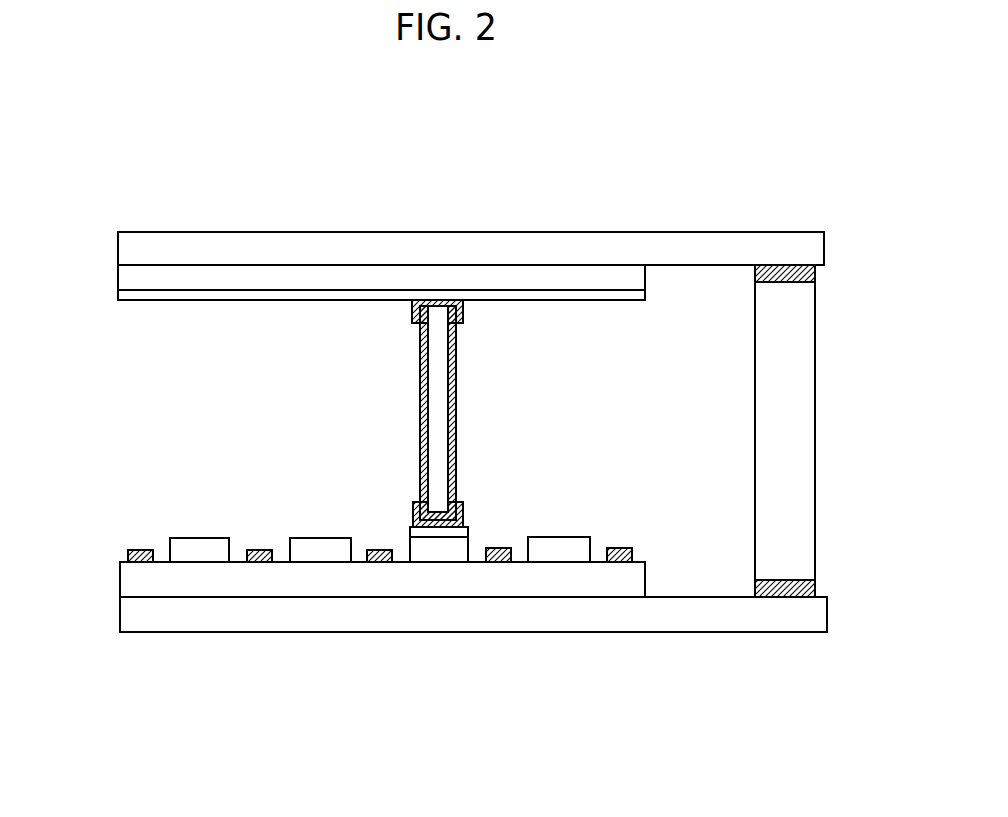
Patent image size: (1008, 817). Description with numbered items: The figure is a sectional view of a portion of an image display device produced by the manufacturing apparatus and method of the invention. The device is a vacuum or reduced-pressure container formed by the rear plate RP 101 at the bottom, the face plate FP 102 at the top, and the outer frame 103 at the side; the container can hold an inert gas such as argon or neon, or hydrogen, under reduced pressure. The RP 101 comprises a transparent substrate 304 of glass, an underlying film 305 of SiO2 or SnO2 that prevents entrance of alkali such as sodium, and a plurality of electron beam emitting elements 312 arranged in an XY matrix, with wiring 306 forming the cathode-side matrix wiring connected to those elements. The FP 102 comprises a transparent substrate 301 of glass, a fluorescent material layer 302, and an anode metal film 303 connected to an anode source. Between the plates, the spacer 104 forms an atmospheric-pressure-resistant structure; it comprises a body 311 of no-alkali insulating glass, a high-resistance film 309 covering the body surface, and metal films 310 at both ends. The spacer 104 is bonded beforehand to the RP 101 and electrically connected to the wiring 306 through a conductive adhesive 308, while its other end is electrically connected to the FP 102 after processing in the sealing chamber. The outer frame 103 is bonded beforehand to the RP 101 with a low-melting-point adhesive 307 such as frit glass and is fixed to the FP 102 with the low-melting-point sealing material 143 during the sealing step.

The RP 101 is at (439, 630).
The FP 102 is at (438, 236).
The outer frame 103 is at (802, 428).
The spacer 104 is at (445, 413).
The low-melting-point sealing material 143 is at (817, 275).
The transparent substrate 301 is at (488, 247).
The fluorescent material layer 302 is at (330, 274).
The anode metal film 303 is at (208, 295).
The transparent substrate 304 is at (658, 617).
The underlying film 305 is at (500, 590).
The wiring 306 is at (567, 537).
The low-melting-point adhesive 307 is at (818, 586).
The conductive adhesive 308 is at (412, 530).
The high-resistance film 309 is at (420, 435).
The metal films 310 is at (412, 318).
The body 311 is at (438, 380).
The electron beam emitting elements 312 is at (497, 548).